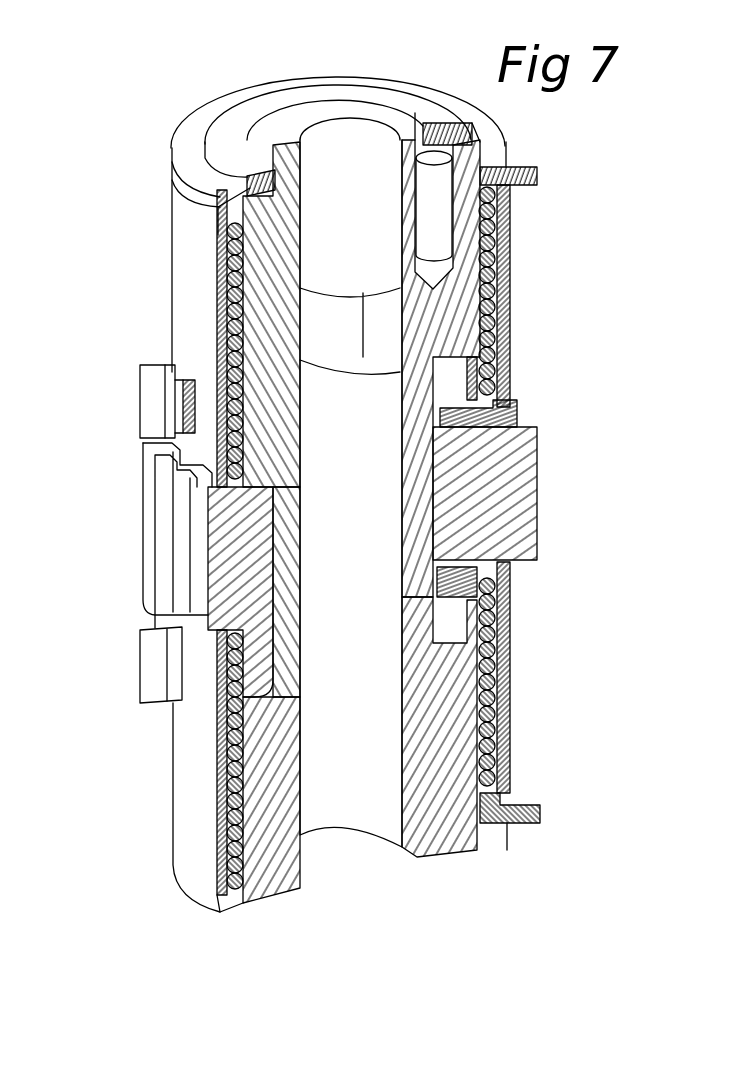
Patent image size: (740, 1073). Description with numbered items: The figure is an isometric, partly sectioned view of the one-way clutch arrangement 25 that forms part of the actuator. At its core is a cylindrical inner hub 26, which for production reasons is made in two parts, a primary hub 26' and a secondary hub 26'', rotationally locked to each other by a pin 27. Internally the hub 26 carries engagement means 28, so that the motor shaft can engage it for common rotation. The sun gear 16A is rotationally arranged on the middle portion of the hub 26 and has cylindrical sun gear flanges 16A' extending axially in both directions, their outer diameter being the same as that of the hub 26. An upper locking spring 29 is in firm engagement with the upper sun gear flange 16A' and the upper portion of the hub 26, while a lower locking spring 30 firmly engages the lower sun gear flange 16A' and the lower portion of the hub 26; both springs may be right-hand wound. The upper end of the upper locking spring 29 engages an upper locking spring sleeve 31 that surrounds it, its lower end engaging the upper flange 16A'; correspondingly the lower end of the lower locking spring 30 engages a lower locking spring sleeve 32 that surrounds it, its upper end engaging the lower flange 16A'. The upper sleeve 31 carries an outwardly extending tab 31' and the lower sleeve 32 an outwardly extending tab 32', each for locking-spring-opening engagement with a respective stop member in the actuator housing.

The one-way clutch arrangement 25 is at (168, 302).
The pin 27 is at (433, 190).
The upper locking spring 29 is at (503, 223).
The engagement means 28 is at (375, 334).
The cylindrical inner hub 26 is at (549, 291).
The upper locking spring sleeve 31 is at (528, 385).
The sun gear 16A is at (538, 493).
The lower locking spring 30 is at (500, 643).
The lower locking spring sleeve 32 is at (548, 706).
The secondary hub 26'' is at (148, 321).
The tab 31' is at (129, 401).
The sun gear flange 16A' is at (163, 565).
The tab 32' is at (119, 713).
The primary hub 26' is at (165, 771).